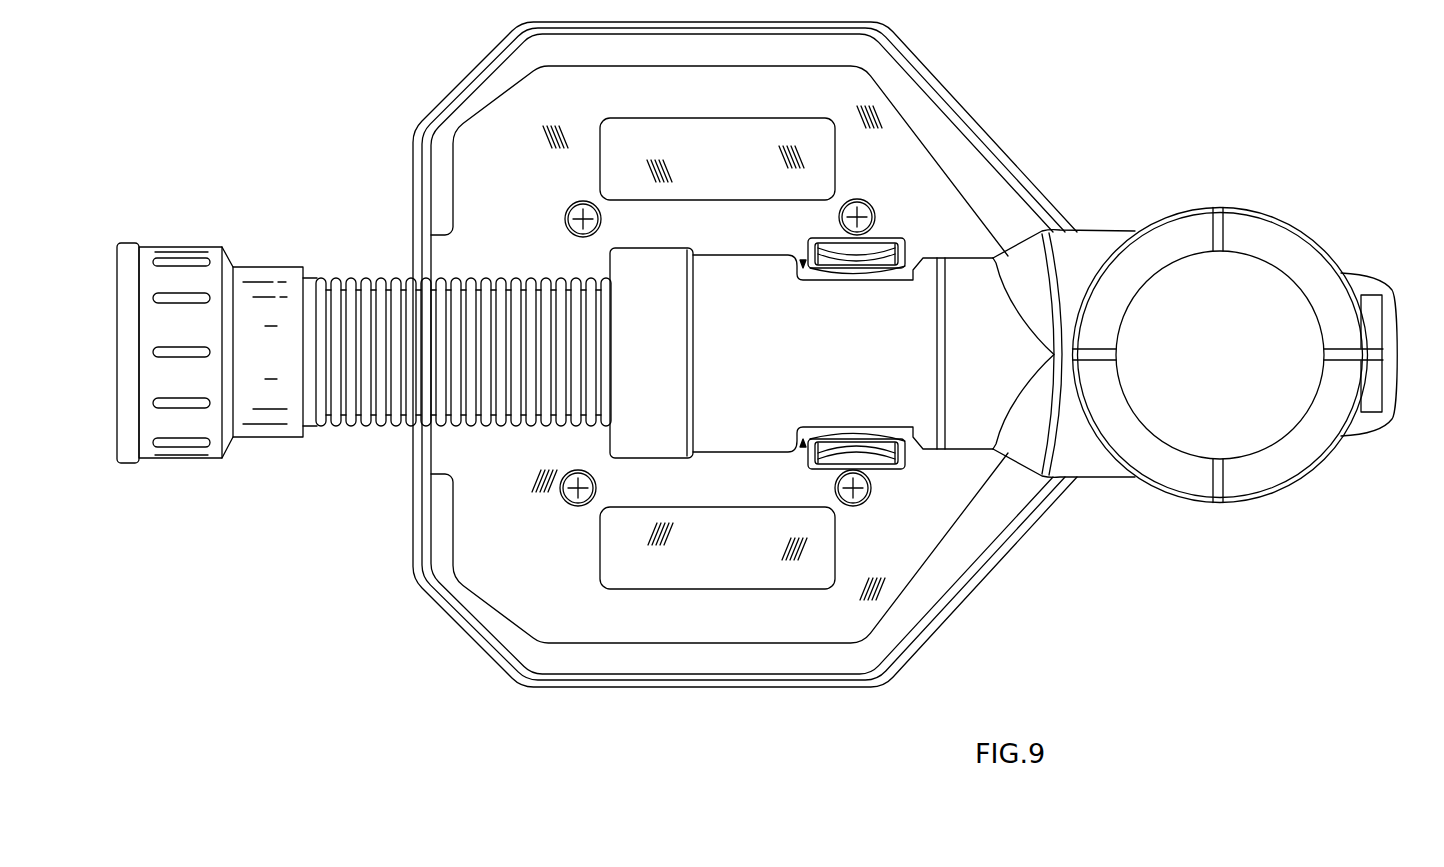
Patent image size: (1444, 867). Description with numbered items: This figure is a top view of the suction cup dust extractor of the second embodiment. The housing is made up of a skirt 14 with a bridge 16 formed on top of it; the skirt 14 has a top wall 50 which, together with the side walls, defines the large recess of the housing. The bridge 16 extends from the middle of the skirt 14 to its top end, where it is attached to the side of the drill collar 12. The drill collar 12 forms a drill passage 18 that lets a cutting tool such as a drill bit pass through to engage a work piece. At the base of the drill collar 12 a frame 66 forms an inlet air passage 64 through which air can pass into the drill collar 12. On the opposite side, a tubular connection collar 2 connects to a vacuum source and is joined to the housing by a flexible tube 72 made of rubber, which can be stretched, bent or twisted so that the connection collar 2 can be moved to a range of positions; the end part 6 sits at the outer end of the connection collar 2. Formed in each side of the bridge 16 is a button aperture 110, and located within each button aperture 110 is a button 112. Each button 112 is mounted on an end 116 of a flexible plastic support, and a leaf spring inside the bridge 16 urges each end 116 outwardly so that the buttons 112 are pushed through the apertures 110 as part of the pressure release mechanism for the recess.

The connection collar 2 is at (151, 258).
The end cap 6 is at (127, 253).
The drill collar 12 is at (1265, 483).
The skirt 14 is at (537, 185).
The bridge 16 is at (860, 346).
The drill passage 18 is at (1198, 325).
The top wall 50 is at (551, 592).
The inlet air passage 64 is at (1366, 308).
The frame 66 is at (1388, 313).
The flexible tube 72 is at (327, 428).
The button aperture 110 is at (803, 262).
The button 112 is at (883, 251).
The end of flexible plastic support 116 is at (910, 273).